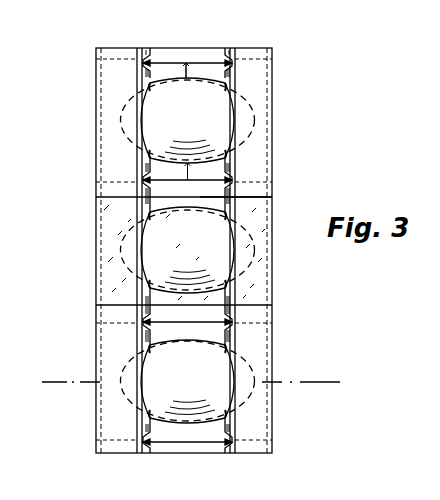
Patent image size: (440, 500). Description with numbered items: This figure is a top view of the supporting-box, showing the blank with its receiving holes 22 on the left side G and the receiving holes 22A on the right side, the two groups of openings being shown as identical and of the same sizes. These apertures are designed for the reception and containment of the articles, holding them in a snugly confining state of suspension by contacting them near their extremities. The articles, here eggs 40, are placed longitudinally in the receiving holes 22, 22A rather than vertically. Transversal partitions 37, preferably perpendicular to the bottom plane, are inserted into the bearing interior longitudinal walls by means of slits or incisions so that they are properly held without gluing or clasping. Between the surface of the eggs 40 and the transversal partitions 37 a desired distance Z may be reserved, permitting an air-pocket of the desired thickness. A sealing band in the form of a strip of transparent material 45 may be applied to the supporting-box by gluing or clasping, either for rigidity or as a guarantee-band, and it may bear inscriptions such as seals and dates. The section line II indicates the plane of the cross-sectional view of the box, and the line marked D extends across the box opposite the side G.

The receiving holes 22 is at (141, 118).
The receiving holes 22A is at (233, 118).
The transversal partitions 37 is at (148, 180).
The eggs 40 is at (207, 92).
The strip of transparent material 45 is at (273, 262).
The left side G is at (100, 197).
The section line D is at (272, 199).
The distance Z is at (184, 76).
The section line II- II is at (191, 371).